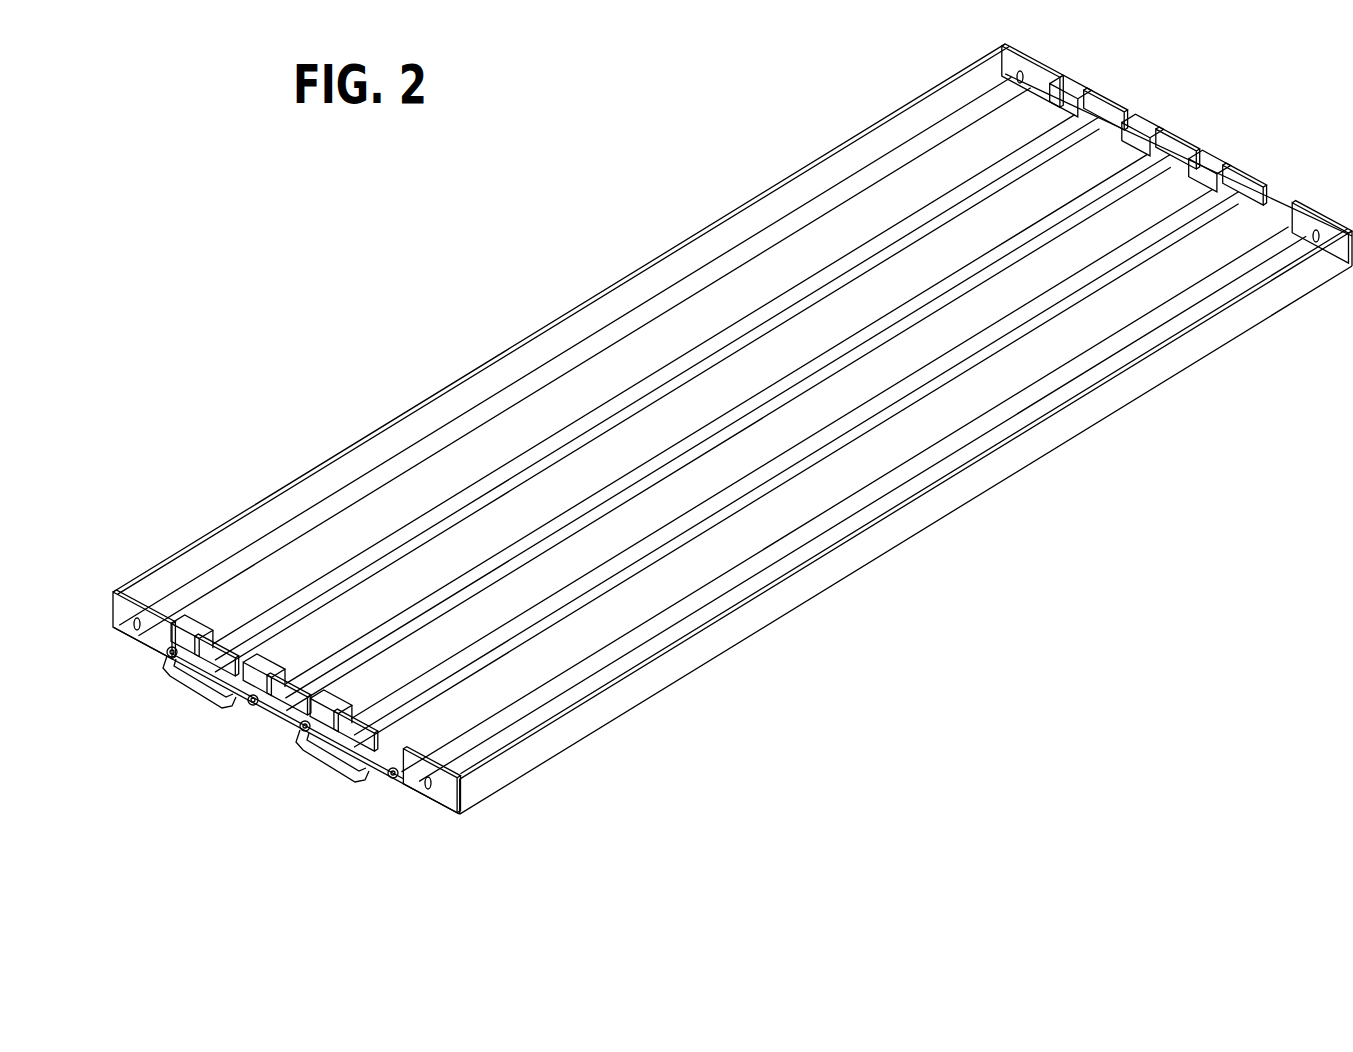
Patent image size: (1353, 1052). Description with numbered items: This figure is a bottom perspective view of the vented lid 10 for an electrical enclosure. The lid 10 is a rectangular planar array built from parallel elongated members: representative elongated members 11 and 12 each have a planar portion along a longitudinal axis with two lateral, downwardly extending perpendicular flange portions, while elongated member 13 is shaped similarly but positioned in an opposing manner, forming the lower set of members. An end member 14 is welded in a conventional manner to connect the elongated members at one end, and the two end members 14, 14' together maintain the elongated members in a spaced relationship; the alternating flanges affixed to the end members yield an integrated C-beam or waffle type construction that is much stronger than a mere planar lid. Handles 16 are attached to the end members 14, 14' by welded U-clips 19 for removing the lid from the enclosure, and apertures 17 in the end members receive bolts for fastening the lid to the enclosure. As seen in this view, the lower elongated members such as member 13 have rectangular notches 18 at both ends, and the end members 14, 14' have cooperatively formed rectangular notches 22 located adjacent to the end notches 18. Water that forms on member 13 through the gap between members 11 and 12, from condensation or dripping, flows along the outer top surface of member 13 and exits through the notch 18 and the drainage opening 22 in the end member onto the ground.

The lid 10 is at (508, 320).
The elongated member 11 is at (498, 650).
The elongated member 12 is at (420, 623).
The elongated member 13 is at (1113, 232).
The end member 14 is at (575, 428).
The end member 14' is at (1307, 177).
The handle 16 is at (200, 690).
The aperture 17 is at (1020, 71).
The rectangular notch 18 is at (206, 616).
The U-clip 19 is at (168, 658).
The rectangular notch 22 is at (196, 622).